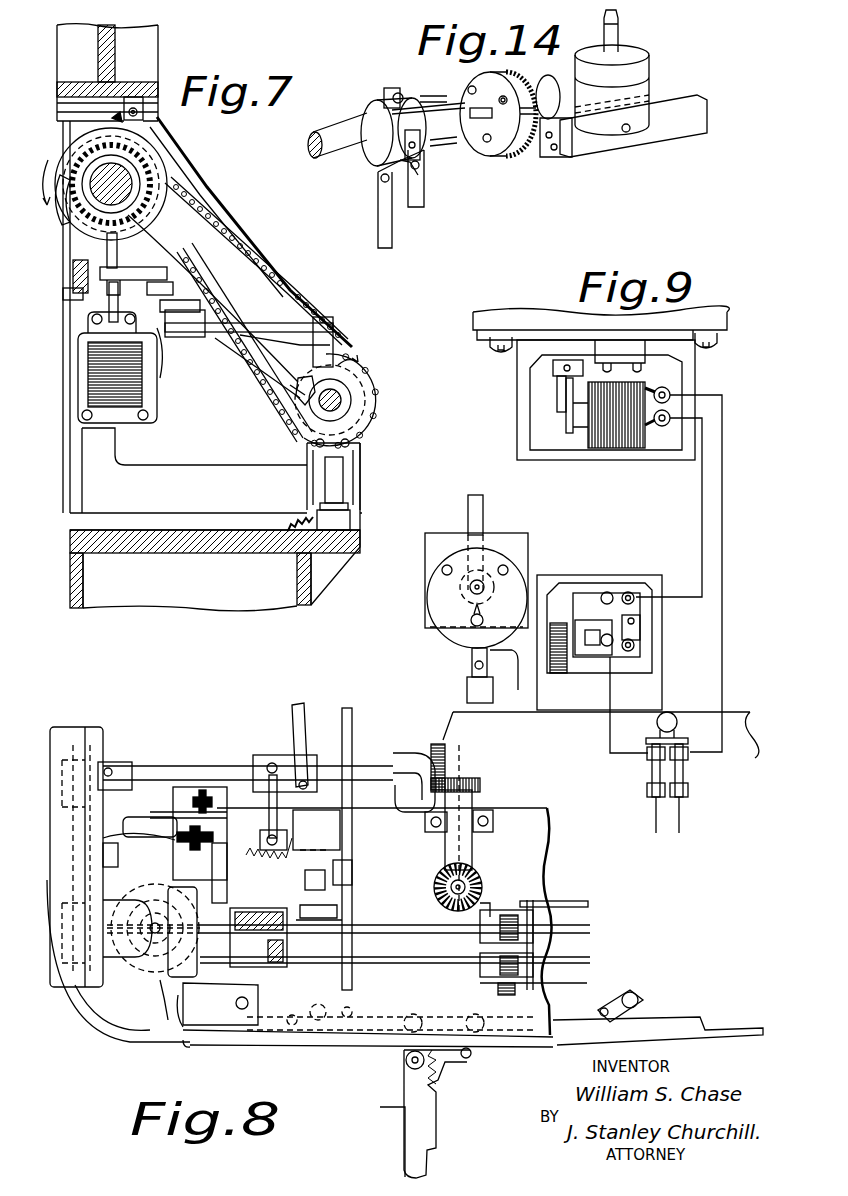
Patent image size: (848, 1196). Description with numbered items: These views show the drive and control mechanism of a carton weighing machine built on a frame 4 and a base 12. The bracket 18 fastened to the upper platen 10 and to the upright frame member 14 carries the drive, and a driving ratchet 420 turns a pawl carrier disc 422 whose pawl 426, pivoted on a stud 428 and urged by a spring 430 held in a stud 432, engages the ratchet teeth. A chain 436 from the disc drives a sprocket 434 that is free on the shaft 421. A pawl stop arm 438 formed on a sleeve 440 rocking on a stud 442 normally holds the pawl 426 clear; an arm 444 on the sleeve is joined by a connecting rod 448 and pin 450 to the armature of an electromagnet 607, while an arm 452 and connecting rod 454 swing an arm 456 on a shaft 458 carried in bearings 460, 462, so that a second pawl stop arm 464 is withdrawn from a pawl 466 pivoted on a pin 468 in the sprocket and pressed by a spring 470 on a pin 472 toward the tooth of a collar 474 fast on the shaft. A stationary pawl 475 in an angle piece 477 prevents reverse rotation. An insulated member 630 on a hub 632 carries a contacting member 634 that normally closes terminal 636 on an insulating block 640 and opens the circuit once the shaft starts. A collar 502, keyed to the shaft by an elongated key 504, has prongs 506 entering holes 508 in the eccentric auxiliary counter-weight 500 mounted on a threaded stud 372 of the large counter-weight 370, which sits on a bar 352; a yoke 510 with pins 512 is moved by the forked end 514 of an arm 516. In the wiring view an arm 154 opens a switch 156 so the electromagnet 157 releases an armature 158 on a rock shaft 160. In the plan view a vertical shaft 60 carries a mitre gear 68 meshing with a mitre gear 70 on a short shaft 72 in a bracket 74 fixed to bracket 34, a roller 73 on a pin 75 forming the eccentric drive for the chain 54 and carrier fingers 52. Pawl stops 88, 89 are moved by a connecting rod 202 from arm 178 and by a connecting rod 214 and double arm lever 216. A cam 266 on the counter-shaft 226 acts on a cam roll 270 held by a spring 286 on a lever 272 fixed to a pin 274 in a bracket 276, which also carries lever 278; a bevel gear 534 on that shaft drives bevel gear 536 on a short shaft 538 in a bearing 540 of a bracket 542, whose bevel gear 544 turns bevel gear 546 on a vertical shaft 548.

In FIG. 7, the bracket 18 is at (160, 58).
In FIG. 7, the angle piece 477 is at (143, 110).
In FIG. 7, the stationary pawl 475 is at (114, 118).
In FIG. 7, the upright frame member 14 is at (70, 476).
In FIG. 7, the base 12 is at (335, 573).
In FIG. 7, the driving ratchet 420 is at (130, 178).
In FIG. 7, the pawl carrier disc 422 is at (150, 165).
In FIG. 7, the stud 432 is at (63, 174).
In FIG. 7, the spring 430 is at (68, 212).
In FIG. 7, the pawl 426 is at (105, 250).
In FIG. 7, the stud 428 is at (80, 237).
In FIG. 7, the pawl stop arm 438 is at (100, 274).
In FIG. 7, the pin 450 is at (65, 295).
In FIG. 7, the arm 444 is at (75, 310).
In FIG. 7, the connecting rod 448 is at (110, 300).
In FIG. 7, the electromagnet 607 is at (90, 370).
In FIG. 7, the chain 436 is at (290, 290).
In FIG. 7, the sleeve 440 is at (170, 230).
In FIG. 7, the stud 442 is at (190, 258).
In FIG. 7, the arm 452 is at (225, 268).
In FIG. 7, the sprocket 434 is at (298, 382).
In FIG. 7, the connecting rod 454 is at (195, 303).
In FIG. 7, the bearing 460 is at (205, 320).
In FIG. 7, the bearing 462 is at (320, 323).
In FIG. 7, the pawl stop arm 464 is at (333, 340).
In FIG. 7, the pawl 466 is at (352, 355).
In FIG. 7, the pin 468 is at (330, 340).
In FIG. 7, the arm 456 is at (158, 340).
In FIG. 7, the shaft 458 is at (225, 338).
In FIG. 7, the spring 470 is at (300, 395).
In FIG. 7, the pin 472 is at (302, 400).
In FIG. 7, the shaft 421 is at (342, 402).
In FIG. 14, the shaft 421 is at (345, 155).
In FIG. 7, the hub 632 is at (352, 400).
In FIG. 9, the hub 632 is at (458, 380).
In FIG. 7, the collar 474 is at (355, 388).
In FIG. 7, the insulated member 630 is at (352, 428).
In FIG. 7, the contacting member 634 is at (362, 470).
In FIG. 7, the terminal 636 is at (345, 490).
In FIG. 7, the insulating block 640 is at (352, 520).
In FIG. 14, the elongated key 504 is at (340, 135).
In FIG. 14, the collar 502 is at (400, 90).
In FIG. 14, the yoke 510 is at (395, 98).
In FIG. 14, the auxiliary counter-weight 500 is at (476, 76).
In FIG. 14, the arm 516 is at (380, 230).
In FIG. 14, the prongs 506 is at (445, 160).
In FIG. 14, the pins 512 is at (420, 180).
In FIG. 14, the forked end 514 is at (430, 210).
In FIG. 14, the holes 508 is at (505, 140).
In FIG. 14, the threaded stud 372 is at (492, 158).
In FIG. 14, the large counter-weight 370 is at (645, 85).
In FIG. 14, the bar 352 is at (683, 128).
In FIG. 9, the upper platen 10 is at (475, 314).
In FIG. 8, the upper platen 10 is at (520, 808).
In FIG. 9, the electromagnet 157 is at (620, 450).
In FIG. 9, the rock shaft 160 is at (565, 365).
In FIG. 9, the armature 158 is at (566, 428).
In FIG. 9, the arm 154 is at (492, 660).
In FIG. 9, the switch 156 is at (583, 597).
In FIG. 9, the base 4 is at (752, 712).
In FIG. 8, the vertical shaft 60 is at (120, 982).
In FIG. 8, the bracket 74 is at (128, 1035).
In FIG. 8, the short shaft 72 is at (150, 975).
In FIG. 8, the mitre gear 70 is at (178, 872).
In FIG. 8, the mitre gear 68 is at (160, 905).
In FIG. 8, the pin 75 is at (180, 975).
In FIG. 8, the roller 73 is at (190, 990).
In FIG. 8, the pawl stop 89 is at (222, 1000).
In FIG. 8, the bracket 34 is at (280, 970).
In FIG. 8, the counter-shaft 226 is at (172, 766).
In FIG. 8, the cam 266 is at (300, 705).
In FIG. 8, the bracket 542 is at (352, 745).
In FIG. 8, the spring 286 is at (262, 822).
In FIG. 8, the cam roll 270 is at (280, 812).
In FIG. 8, the pawl stop 88 is at (270, 950).
In FIG. 8, the connecting rod 202 is at (388, 937).
In FIG. 8, the connecting rod 214 is at (392, 965).
In FIG. 8, the bearing 540 is at (548, 835).
In FIG. 8, the bevel gear 536 is at (473, 790).
In FIG. 8, the bevel gear 534 is at (443, 752).
In FIG. 8, the short shaft 538 is at (475, 810).
In FIG. 8, the bevel gear 544 is at (465, 870).
In FIG. 8, the bevel gear 546 is at (479, 890).
In FIG. 8, the vertical shaft 548 is at (517, 890).
In FIG. 8, the arm 178 is at (535, 927).
In FIG. 8, the double arm lever 216 is at (535, 965).
In FIG. 8, the lever 272 is at (323, 847).
In FIG. 8, the pin 274 is at (330, 850).
In FIG. 8, the bracket 276 is at (340, 888).
In FIG. 8, the lever 278 is at (345, 905).
In FIG. 8, the chain 54 is at (425, 1015).
In FIG. 8, the carrier fingers 52 is at (425, 1125).